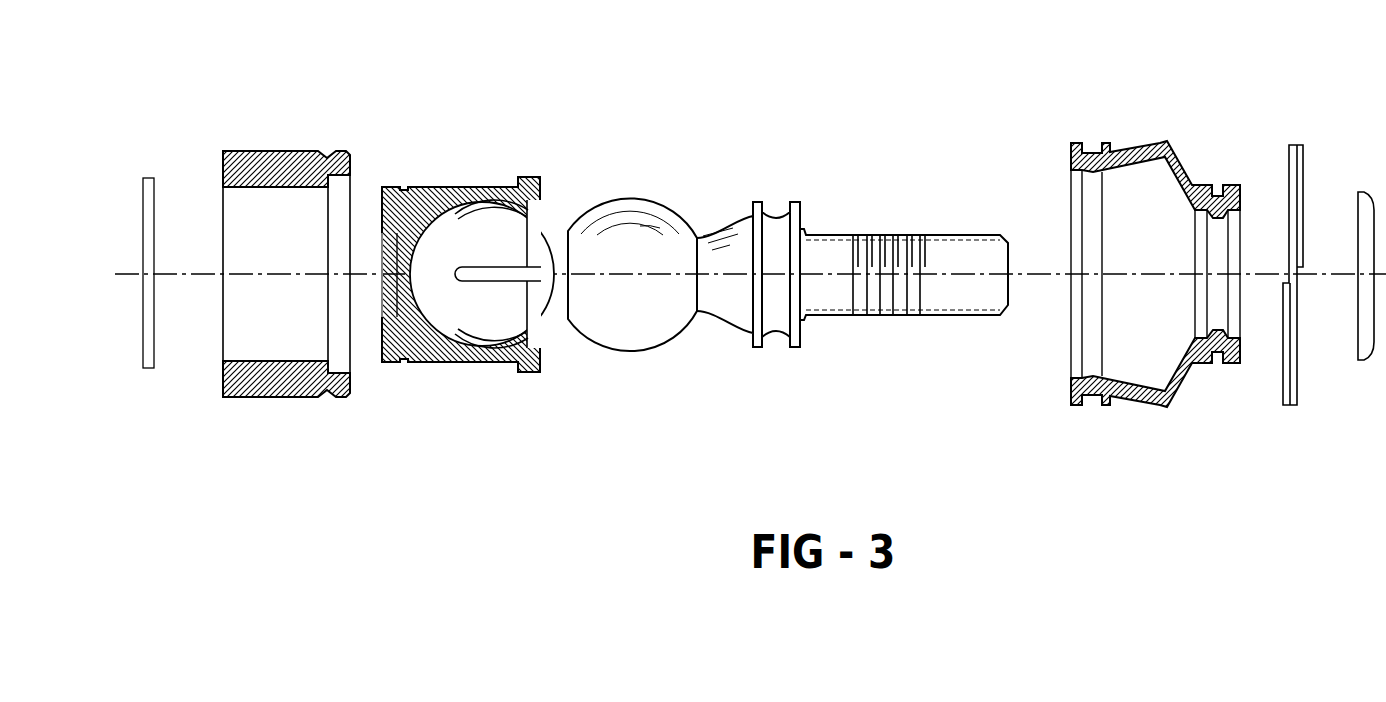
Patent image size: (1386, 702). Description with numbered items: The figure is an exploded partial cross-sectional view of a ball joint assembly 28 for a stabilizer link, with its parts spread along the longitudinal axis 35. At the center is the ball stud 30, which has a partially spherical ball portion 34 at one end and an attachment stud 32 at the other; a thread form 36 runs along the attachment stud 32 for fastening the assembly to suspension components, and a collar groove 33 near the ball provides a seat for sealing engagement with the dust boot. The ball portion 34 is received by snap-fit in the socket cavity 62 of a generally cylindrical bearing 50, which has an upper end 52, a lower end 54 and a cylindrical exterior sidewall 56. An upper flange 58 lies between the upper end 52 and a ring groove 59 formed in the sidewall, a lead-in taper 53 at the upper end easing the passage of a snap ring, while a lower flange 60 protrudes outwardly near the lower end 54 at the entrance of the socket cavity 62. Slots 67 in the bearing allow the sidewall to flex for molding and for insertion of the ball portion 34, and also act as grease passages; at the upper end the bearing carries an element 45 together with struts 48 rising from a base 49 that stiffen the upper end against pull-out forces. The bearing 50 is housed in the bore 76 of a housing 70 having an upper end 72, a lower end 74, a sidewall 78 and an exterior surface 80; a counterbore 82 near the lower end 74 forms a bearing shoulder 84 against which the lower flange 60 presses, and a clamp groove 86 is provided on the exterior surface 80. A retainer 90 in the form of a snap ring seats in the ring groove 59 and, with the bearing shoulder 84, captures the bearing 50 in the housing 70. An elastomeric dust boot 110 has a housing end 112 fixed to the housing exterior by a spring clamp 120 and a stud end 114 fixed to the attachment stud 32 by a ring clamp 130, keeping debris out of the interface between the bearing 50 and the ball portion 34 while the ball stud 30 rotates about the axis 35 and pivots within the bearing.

The ball joint assembly 28 is at (268, 263).
The ball stud 30 is at (804, 233).
The attachment stud 32 is at (904, 233).
The collar groove 33 is at (770, 215).
The ball portion 34 is at (648, 238).
The longitudinal axis 35 is at (1040, 266).
The thread form 36 is at (829, 236).
The retaining ring 45 is at (536, 207).
The ribs or struts 48 is at (543, 226).
The base of relieved portion 49 is at (543, 284).
The bearing 50 is at (519, 270).
The upper end 52 is at (376, 360).
The lead-in taper 53 is at (473, 352).
The lower end 54 is at (542, 370).
The exterior sidewall 56 is at (439, 363).
The upper flange 58 is at (398, 186).
The ring groove 59 is at (405, 362).
The lower flange 60 is at (533, 373).
The socket cavity 62 is at (481, 228).
The slots 67 is at (502, 206).
The housing 70 is at (268, 148).
The upper end 72 is at (222, 168).
The lower end 74 is at (350, 393).
The bore 76 is at (258, 188).
The sidewall 78 is at (243, 165).
The exterior surface 80 is at (275, 396).
The counterbore 82 is at (351, 190).
The bearing shoulder 84 is at (352, 372).
The clamp groove 86 is at (330, 156).
The retainer 90 is at (147, 370).
The dust boot 110 is at (1124, 235).
The housing end 112 is at (1072, 150).
The stud end 114 is at (1240, 195).
The spring clamp 120 is at (1296, 144).
The ring clamp 130 is at (1363, 191).